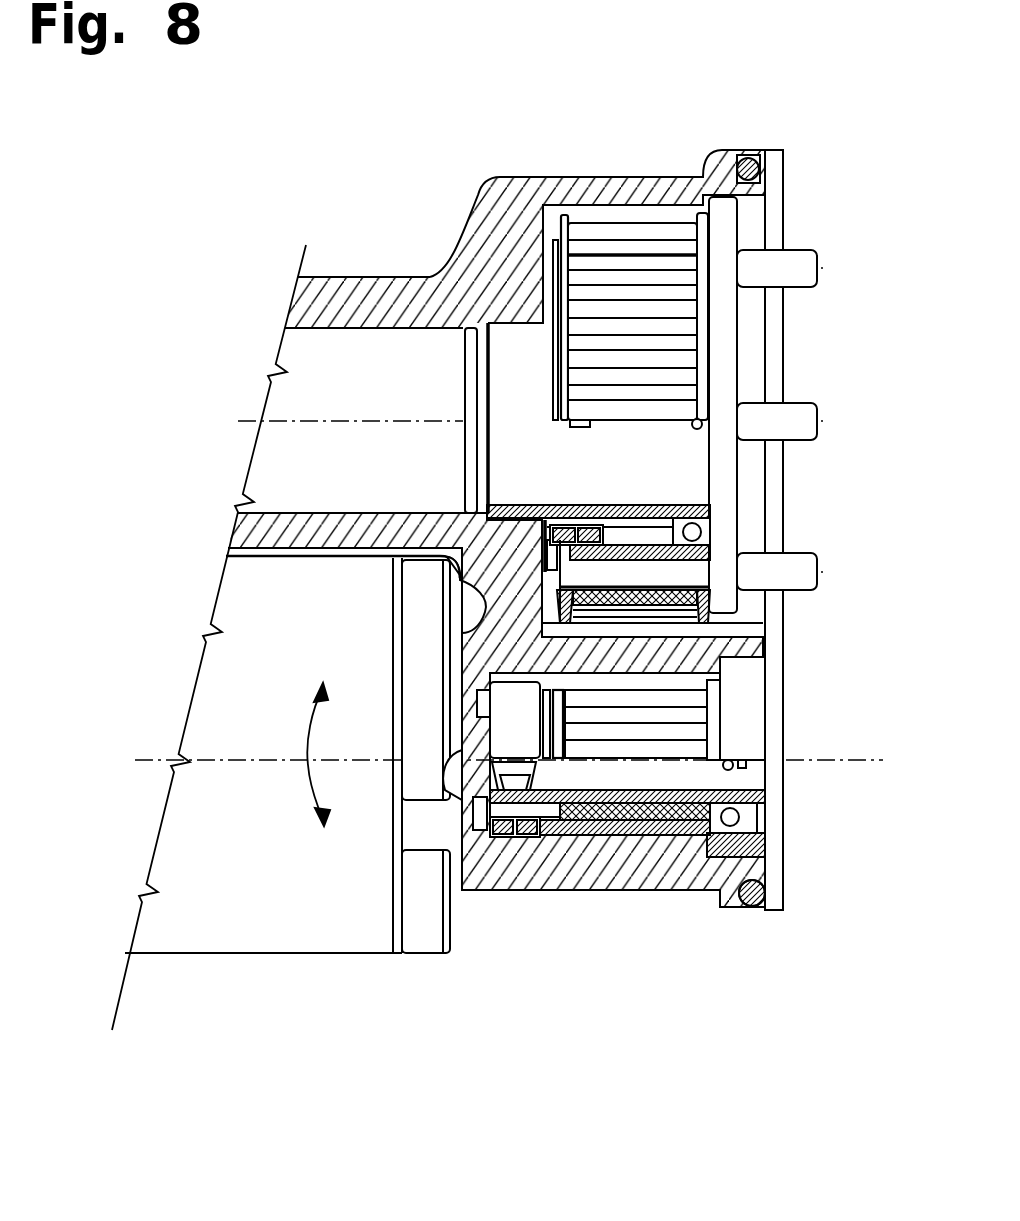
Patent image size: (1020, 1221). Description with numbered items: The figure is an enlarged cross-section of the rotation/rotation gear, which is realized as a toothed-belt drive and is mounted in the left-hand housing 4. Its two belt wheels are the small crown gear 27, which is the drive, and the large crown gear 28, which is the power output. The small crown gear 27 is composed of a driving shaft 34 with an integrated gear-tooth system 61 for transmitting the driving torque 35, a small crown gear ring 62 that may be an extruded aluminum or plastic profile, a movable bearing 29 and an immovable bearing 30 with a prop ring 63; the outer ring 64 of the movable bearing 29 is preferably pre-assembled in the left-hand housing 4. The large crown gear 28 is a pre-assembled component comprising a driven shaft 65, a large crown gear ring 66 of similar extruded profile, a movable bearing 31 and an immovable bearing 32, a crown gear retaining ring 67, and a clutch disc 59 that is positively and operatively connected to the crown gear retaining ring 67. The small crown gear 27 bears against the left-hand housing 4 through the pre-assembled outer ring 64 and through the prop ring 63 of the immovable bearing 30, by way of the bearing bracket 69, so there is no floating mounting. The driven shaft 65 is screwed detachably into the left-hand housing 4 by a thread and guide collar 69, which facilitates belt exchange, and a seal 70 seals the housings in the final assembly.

The left-hand housing 4 is at (320, 277).
The small crown gear 27 is at (653, 720).
The large crown gear 28 is at (623, 323).
The movable bearing 29 is at (517, 833).
The immovable bearing 30 is at (740, 817).
The movable bearing 31 is at (580, 533).
The immovable bearing 32 is at (705, 521).
The driving shaft 34 is at (710, 793).
The driving torque 35 is at (310, 787).
The clutch disc 59 is at (798, 258).
The gear-tooth system 61 is at (512, 793).
The small crown gear ring 62 is at (660, 813).
The prop ring 63 is at (767, 857).
The outer ring 64 is at (522, 840).
The driven shaft 65 is at (624, 510).
The large crown gear ring 66 is at (670, 593).
The crown gear retaining ring 67 is at (697, 553).
The bearing bracket 69 is at (545, 326).
The seal 70 is at (745, 895).